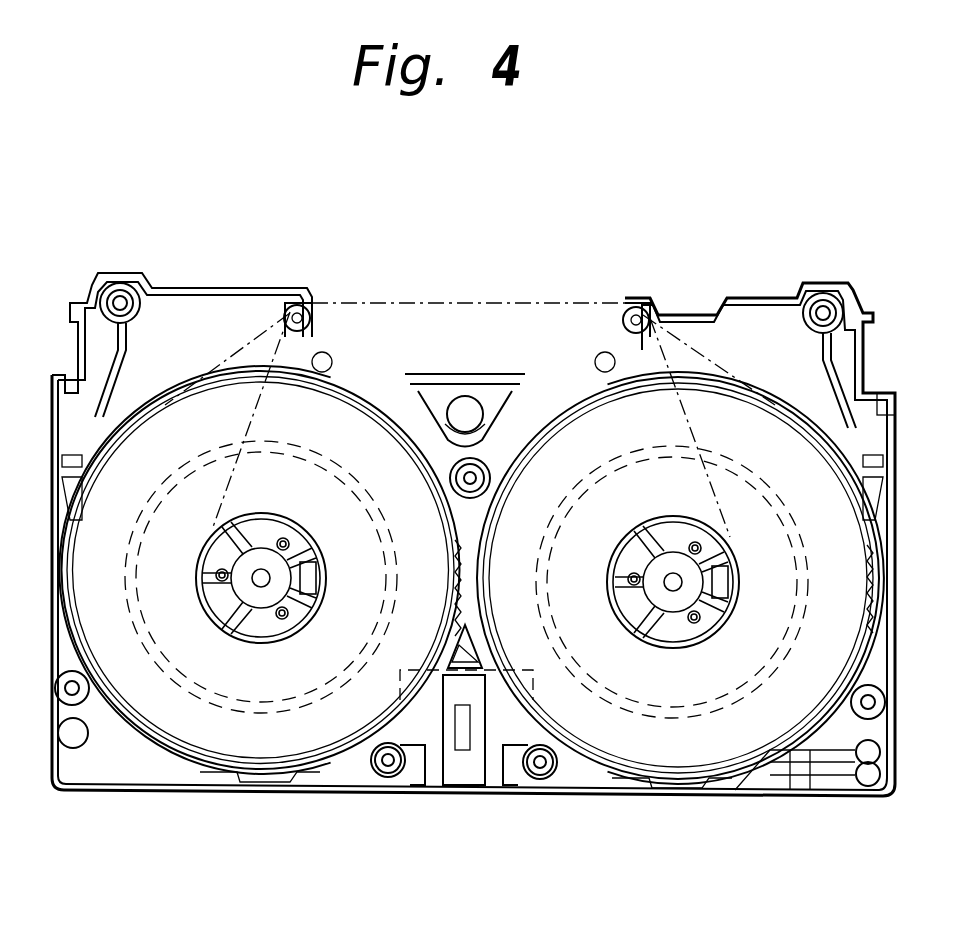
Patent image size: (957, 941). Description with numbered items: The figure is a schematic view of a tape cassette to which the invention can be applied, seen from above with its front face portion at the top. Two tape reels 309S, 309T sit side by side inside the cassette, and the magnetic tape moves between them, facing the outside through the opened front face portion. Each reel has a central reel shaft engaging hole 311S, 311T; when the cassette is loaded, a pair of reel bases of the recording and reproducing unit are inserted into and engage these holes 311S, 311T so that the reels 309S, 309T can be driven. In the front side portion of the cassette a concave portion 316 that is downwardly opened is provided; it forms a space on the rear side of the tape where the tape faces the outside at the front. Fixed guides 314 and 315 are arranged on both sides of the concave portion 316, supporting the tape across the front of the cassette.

The tape reel 309S is at (195, 413).
The tape reel 309T is at (779, 440).
The reel shaft engaging hole 311S is at (263, 592).
The reel shaft engaging hole 311T is at (675, 600).
The fixed guide 314 is at (302, 305).
The fixed guide 315 is at (640, 305).
The concave portion 316 is at (467, 395).